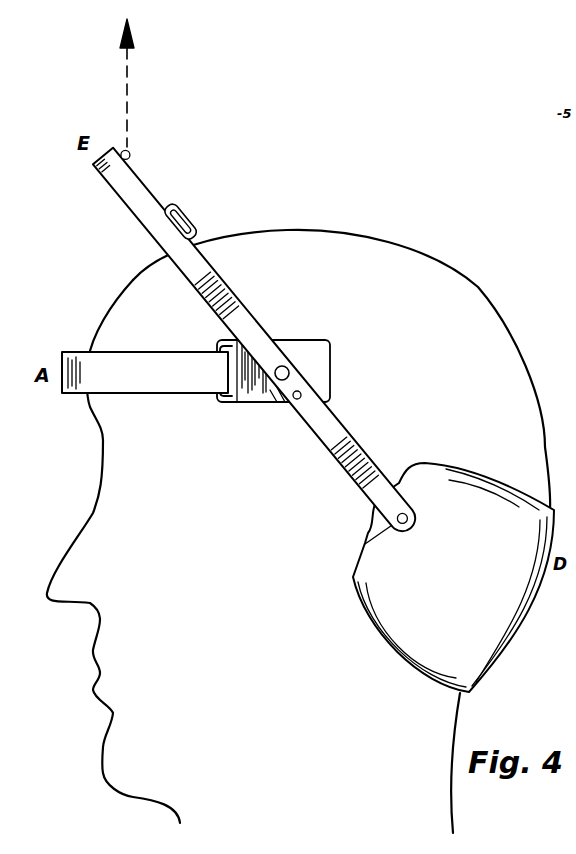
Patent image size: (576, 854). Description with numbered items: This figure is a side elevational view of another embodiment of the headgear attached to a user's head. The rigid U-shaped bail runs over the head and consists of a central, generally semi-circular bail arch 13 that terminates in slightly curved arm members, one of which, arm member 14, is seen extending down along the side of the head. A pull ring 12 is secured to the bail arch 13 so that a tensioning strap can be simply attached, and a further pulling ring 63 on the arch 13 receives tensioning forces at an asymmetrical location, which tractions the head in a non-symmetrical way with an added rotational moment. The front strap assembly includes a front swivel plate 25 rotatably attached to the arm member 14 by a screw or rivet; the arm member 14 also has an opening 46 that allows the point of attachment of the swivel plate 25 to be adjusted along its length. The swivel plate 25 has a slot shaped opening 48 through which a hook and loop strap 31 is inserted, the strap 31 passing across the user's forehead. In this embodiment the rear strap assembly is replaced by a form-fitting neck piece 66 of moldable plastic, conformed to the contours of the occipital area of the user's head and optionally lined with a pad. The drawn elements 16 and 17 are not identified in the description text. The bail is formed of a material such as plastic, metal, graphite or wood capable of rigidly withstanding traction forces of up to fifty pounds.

The pull ring 12 is at (130, 155).
The bail arch 13 is at (137, 192).
The pulling ring 63 is at (180, 212).
The hook and loop strap 31 is at (150, 367).
The slot shaped opening 48 is at (230, 402).
The mounting block 16 is at (272, 403).
The opening 46 is at (296, 399).
The front swivel plate 25 is at (321, 342).
The arm member 14 is at (350, 443).
The hinge link 17 is at (366, 546).
The form-fitting neck piece 66 is at (481, 615).